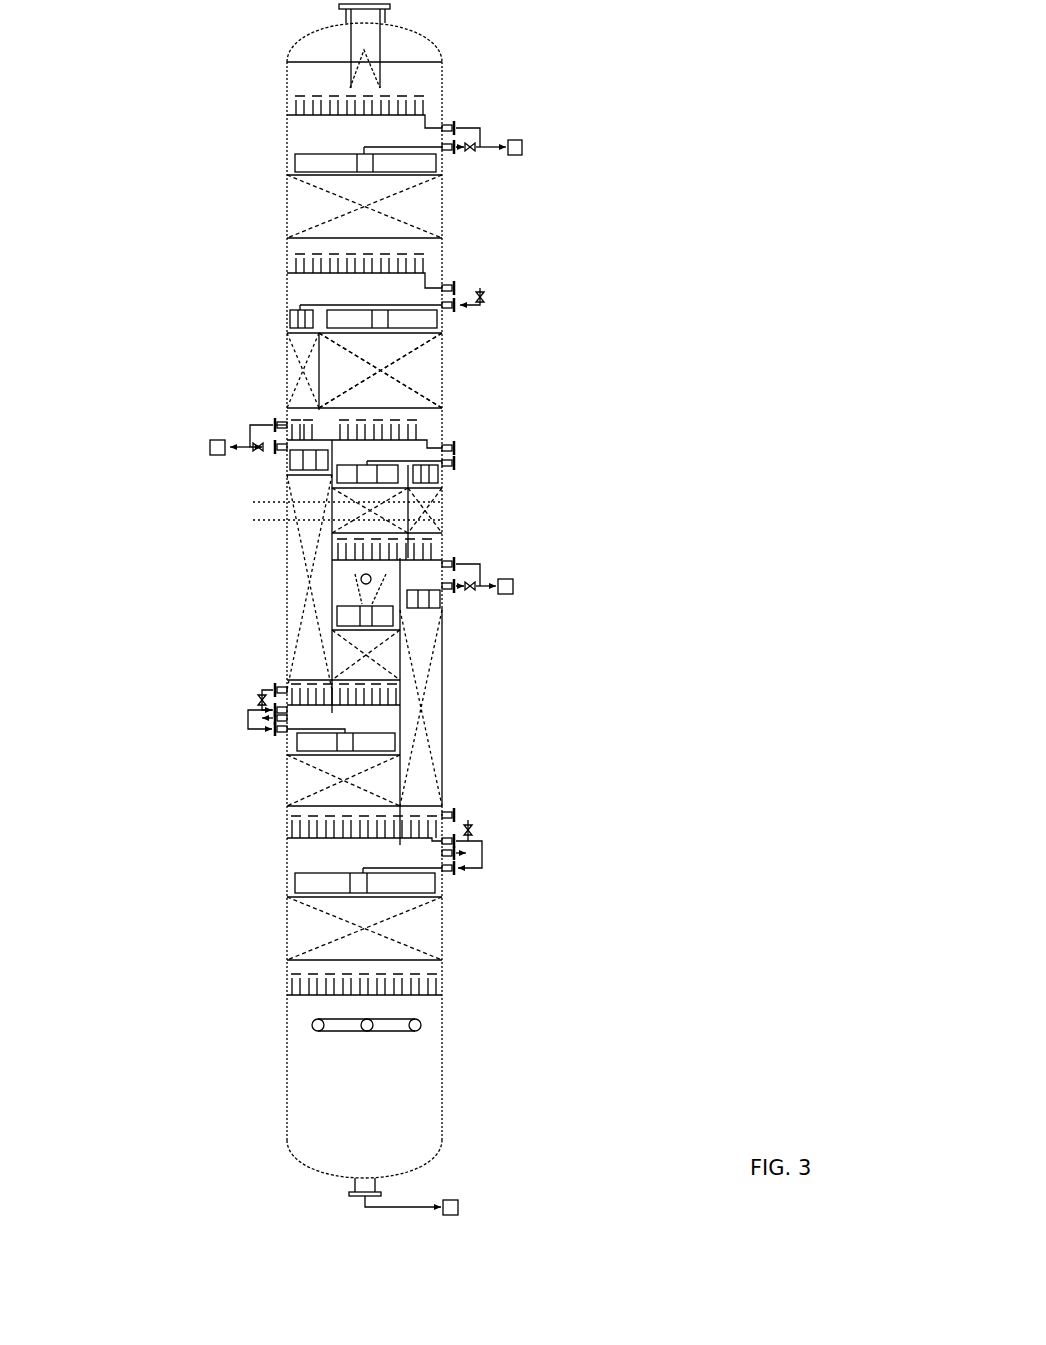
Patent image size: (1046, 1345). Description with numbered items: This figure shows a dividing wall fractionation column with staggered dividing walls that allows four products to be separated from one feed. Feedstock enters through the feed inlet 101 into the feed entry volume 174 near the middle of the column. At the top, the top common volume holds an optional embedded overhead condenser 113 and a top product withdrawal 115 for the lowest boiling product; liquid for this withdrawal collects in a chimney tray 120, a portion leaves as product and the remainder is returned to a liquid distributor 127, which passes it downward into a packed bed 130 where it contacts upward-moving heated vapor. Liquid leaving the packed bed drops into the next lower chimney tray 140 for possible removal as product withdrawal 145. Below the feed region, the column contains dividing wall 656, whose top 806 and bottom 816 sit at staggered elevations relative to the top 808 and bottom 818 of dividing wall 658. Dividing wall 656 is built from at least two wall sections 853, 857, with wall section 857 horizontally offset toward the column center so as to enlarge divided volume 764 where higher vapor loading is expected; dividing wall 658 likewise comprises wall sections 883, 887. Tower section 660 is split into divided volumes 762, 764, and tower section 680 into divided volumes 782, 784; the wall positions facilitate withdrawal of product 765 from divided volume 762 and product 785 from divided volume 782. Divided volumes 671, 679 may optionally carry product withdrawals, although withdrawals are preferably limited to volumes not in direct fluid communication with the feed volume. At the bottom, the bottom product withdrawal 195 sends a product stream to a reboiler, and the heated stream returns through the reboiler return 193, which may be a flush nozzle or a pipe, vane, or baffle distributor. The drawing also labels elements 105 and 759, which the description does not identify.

The feed inlet 101 is at (443, 592).
The column shell upper section 105 is at (278, 190).
The embedded overhead condenser 113 is at (385, 50).
The top product withdrawal 115 is at (527, 146).
The chimney tray 120 is at (430, 100).
The liquid distributor 127 is at (442, 160).
The packed bed 130 is at (434, 210).
The chimney tray 140 is at (302, 248).
The product withdrawal 145 is at (462, 288).
The top of dividing wall 806 is at (312, 318).
The wall section 853 is at (322, 362).
The divided volume 671 is at (432, 355).
The divided volume 762 is at (285, 375).
The dividing wall 656 is at (183, 426).
The product 765 is at (222, 450).
The feed entry volume 174 is at (338, 575).
The top of dividing wall 808 is at (420, 470).
The wall section 883 is at (410, 510).
The divided volume 782 is at (435, 512).
The dividing wall 658 is at (410, 569).
The product 785 is at (517, 587).
The wall section 857 is at (330, 573).
The divided volume 764 is at (290, 575).
The tower section 660 is at (225, 562).
The tower section 680 is at (485, 685).
The divided volume 784 is at (440, 703).
The bottom of dividing wall 816 is at (330, 713).
The wall section 887 is at (402, 735).
The divided volume 679 is at (300, 775).
The bottom of dividing wall 818 is at (405, 848).
The reboiler return line 759 is at (460, 815).
The reboiler return 193 is at (380, 1033).
The bottom product withdrawal 195 is at (458, 1207).